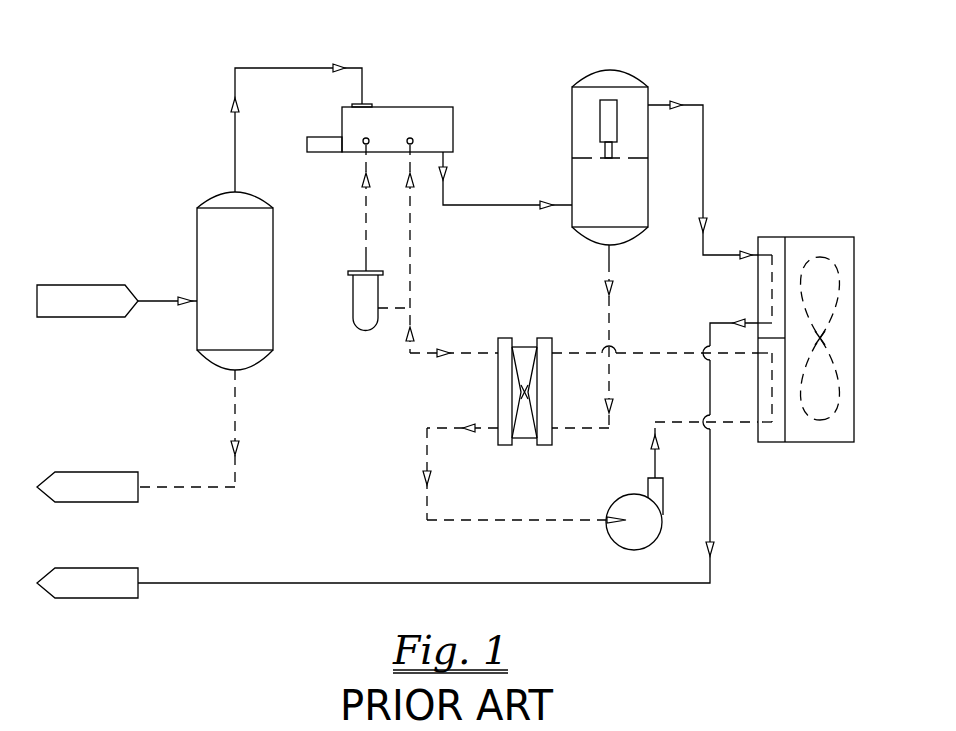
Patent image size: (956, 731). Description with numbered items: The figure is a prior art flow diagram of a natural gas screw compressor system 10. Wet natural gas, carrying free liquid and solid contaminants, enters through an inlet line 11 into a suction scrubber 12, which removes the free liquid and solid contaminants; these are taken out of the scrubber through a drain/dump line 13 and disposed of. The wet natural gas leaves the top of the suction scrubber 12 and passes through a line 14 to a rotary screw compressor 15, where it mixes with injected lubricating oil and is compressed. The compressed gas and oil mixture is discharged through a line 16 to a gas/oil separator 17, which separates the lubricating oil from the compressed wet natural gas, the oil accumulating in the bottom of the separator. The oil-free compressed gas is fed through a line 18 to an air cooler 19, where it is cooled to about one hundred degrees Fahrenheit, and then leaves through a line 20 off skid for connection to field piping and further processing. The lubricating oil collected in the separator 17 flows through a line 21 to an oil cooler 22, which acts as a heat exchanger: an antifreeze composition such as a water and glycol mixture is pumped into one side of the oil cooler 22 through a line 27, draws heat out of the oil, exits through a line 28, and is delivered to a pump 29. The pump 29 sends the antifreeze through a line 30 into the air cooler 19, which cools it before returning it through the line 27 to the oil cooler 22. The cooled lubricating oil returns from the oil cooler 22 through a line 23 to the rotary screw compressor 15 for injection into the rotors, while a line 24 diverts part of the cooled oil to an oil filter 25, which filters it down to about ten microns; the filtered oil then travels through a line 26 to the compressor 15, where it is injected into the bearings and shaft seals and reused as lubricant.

The natural gas screw compressor system 10 is at (162, 119).
The inlet line 11 is at (157, 300).
The suction scrubber 12 is at (197, 240).
The drain/dump line 13 is at (235, 408).
The line 14 is at (258, 67).
The rotary screw compressor 15 is at (397, 107).
The line 16 is at (482, 205).
The gas/oil separator 17 is at (572, 118).
The line 18 is at (703, 162).
The air cooler 19 is at (815, 237).
The line 20 is at (710, 540).
The line 21 is at (609, 313).
The oil cooler 22 is at (533, 350).
The line 23 is at (480, 352).
The line 24 is at (408, 310).
The oil filter 25 is at (358, 303).
The line 26 is at (363, 222).
The line 27 is at (663, 353).
The line 28 is at (427, 455).
The pump 29 is at (620, 500).
The line 30 is at (735, 432).